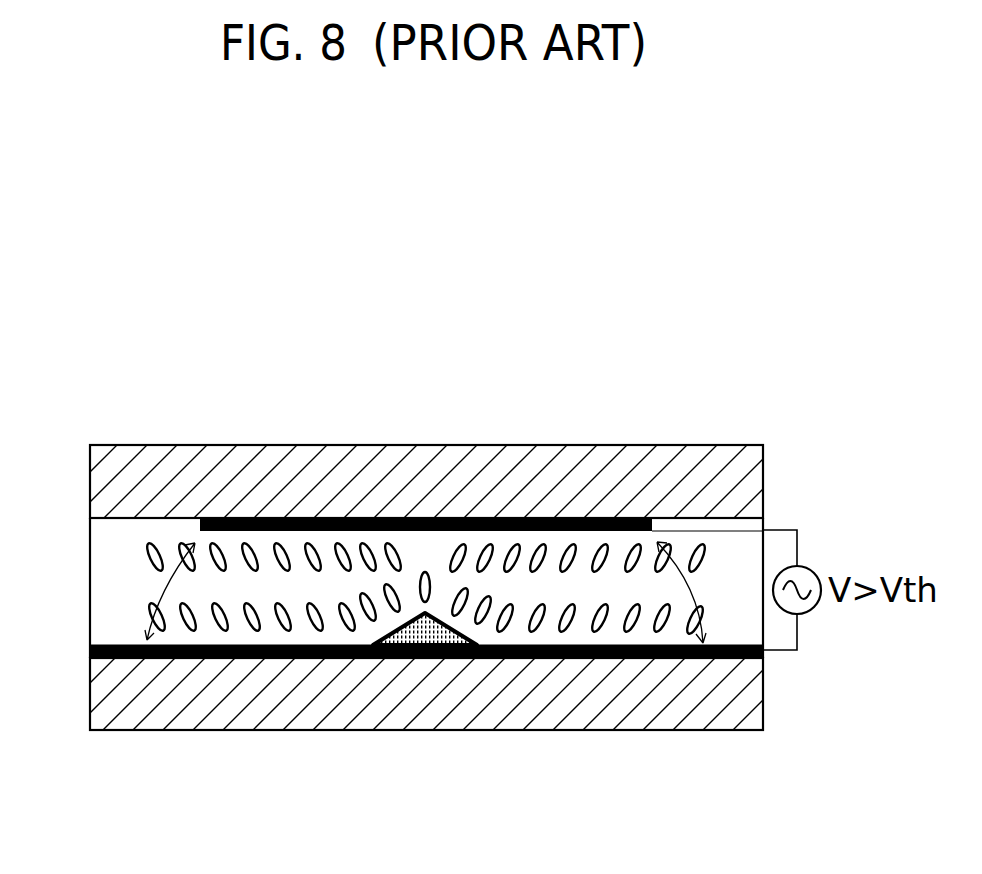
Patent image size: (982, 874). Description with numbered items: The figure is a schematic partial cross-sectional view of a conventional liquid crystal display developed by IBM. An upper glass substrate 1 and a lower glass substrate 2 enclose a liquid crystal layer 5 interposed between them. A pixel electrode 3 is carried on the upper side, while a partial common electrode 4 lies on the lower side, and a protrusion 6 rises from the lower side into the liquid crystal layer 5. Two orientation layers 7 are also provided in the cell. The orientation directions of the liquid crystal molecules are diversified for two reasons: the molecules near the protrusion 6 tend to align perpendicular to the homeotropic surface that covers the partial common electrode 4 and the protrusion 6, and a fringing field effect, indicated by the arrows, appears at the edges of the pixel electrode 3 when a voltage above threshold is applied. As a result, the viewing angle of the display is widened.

The upper glass substrate 1 is at (765, 479).
The lower glass substrate 2 is at (765, 698).
The pixel electrode 3 is at (200, 517).
The partial common electrode 4 is at (90, 652).
The liquid crystal layer 5 is at (90, 577).
The protrusion 6 is at (442, 658).
The orientation layers 7 is at (655, 529).